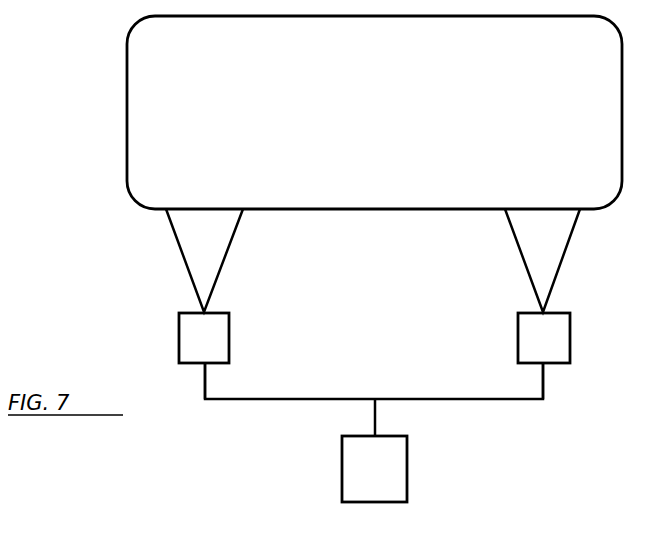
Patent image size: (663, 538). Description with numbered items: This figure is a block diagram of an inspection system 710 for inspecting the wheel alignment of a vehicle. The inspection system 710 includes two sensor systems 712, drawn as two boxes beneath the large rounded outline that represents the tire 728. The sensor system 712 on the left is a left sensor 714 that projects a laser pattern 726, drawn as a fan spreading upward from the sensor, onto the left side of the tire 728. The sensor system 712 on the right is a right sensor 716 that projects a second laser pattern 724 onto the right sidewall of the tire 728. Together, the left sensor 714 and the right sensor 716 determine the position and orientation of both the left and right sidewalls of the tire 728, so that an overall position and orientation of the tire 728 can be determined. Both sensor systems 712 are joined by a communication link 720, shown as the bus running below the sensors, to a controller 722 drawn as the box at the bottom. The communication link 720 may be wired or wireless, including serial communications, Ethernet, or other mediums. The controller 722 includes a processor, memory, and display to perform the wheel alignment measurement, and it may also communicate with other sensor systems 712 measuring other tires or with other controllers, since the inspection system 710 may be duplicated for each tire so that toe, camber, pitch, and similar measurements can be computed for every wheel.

The inspection system 710 is at (545, 477).
The sensor system 712 is at (197, 335).
The left sensor 714 is at (189, 363).
The right sensor 716 is at (555, 363).
The communication link 720 is at (482, 402).
The controller 722 is at (408, 480).
The second laser pattern 724 is at (548, 263).
The laser pattern 726 is at (202, 250).
The tire 728 is at (140, 69).